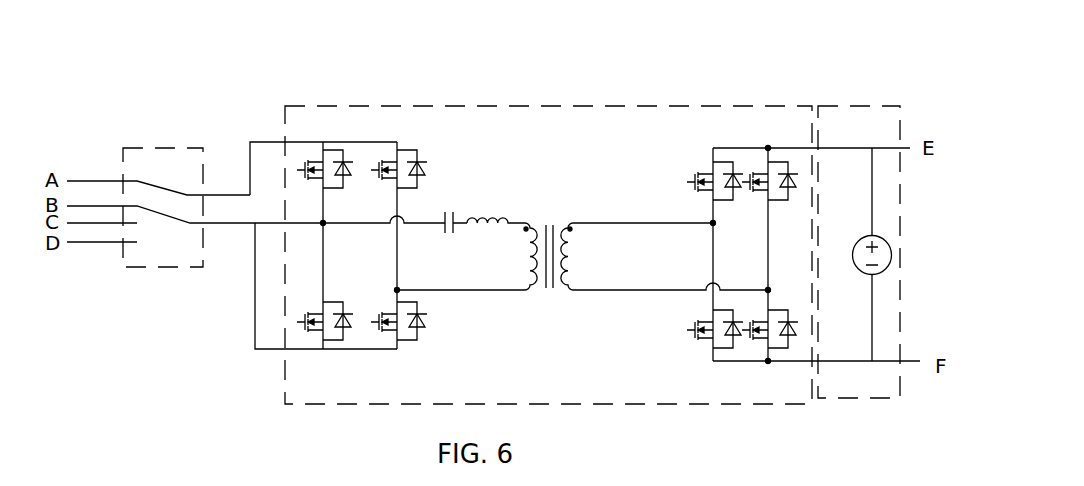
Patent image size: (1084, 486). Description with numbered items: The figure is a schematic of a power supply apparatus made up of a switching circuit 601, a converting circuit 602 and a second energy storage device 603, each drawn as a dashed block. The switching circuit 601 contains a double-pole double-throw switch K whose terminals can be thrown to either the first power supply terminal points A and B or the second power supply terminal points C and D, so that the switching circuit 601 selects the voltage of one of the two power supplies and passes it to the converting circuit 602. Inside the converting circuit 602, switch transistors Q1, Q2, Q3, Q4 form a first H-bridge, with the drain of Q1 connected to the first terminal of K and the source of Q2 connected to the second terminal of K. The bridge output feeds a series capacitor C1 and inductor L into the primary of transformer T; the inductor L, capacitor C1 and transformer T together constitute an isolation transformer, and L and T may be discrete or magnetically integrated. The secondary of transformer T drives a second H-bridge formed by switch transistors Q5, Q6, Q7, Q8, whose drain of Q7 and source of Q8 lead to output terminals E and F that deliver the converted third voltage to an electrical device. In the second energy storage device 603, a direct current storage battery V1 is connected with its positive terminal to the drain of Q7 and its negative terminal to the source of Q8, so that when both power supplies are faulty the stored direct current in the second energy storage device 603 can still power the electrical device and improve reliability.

The switching circuit 601 is at (197, 100).
The converting circuit 602 is at (533, 213).
The second energy storage device 603 is at (872, 212).
The switch transistor Q1 is at (324, 182).
The switch transistor Q2 is at (323, 286).
The switch transistor Q3 is at (396, 182).
The switch transistor Q4 is at (394, 286).
The switch transistor Q5 is at (705, 185).
The switch transistor Q6 is at (712, 296).
The switch transistor Q7 is at (774, 219).
The switch transistor Q8 is at (774, 319).
The capacitor C1 is at (455, 238).
The inductor L is at (496, 241).
The transformer T is at (548, 272).
The direct current storage battery V1 is at (859, 254).